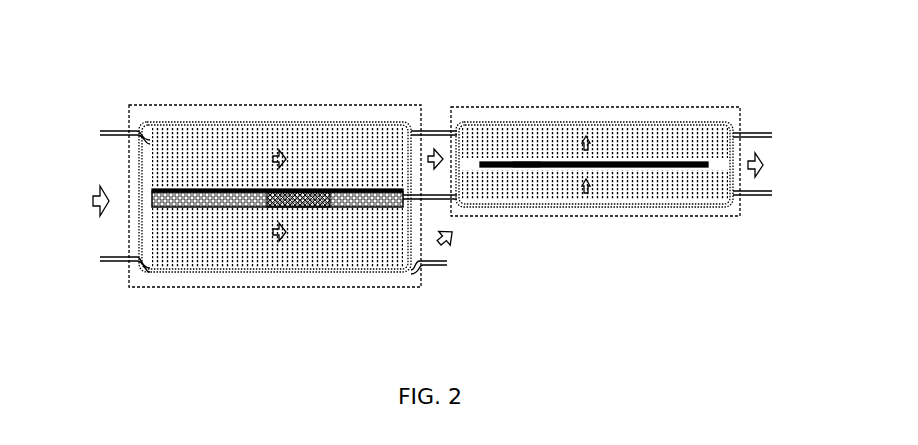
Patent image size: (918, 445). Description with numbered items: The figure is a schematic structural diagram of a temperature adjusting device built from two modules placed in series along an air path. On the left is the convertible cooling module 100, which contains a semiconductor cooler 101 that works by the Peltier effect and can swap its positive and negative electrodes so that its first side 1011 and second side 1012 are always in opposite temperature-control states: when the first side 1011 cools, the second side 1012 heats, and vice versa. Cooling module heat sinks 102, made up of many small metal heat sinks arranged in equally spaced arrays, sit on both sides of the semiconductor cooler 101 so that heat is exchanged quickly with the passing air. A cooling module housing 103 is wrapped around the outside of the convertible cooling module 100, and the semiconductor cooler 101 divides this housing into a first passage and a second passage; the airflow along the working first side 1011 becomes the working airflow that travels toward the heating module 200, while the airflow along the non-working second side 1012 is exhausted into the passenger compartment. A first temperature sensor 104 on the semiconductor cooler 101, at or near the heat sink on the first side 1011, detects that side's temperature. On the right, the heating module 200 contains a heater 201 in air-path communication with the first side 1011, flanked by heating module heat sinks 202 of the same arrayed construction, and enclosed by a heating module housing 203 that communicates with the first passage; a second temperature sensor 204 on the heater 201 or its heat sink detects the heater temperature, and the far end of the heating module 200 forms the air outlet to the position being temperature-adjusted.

The convertible cooling module 100 is at (203, 105).
The semiconductor cooler 101 is at (220, 207).
The first side 1011 is at (150, 190).
The second side 1012 is at (162, 210).
The cooling module heat sink 102 is at (355, 125).
The cooling module housing 103 is at (390, 273).
The first temperature sensor 104 is at (328, 207).
The heating module 200 is at (592, 108).
The heater 201 is at (710, 168).
The heating module heat sink 202 is at (730, 148).
The heating module housing 203 is at (735, 203).
The second temperature sensor 204 is at (537, 168).